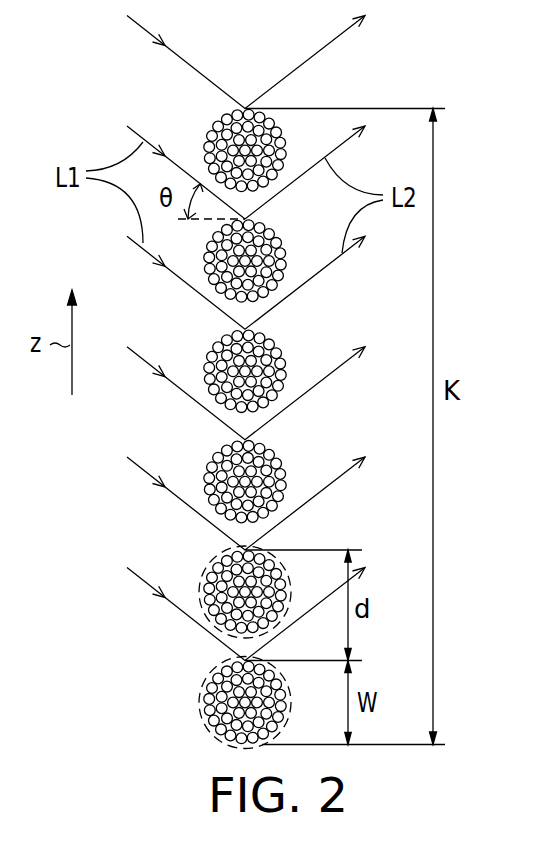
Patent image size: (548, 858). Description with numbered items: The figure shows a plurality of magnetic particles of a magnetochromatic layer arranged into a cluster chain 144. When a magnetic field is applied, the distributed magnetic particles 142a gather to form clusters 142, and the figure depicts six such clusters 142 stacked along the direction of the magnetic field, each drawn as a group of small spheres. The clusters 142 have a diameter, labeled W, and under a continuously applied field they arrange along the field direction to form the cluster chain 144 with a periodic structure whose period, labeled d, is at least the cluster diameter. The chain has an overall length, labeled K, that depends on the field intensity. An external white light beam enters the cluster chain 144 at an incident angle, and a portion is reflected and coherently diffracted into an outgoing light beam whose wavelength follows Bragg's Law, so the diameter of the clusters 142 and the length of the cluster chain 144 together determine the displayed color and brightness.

The cluster chain 144 is at (186, 89).
The cluster 142 is at (200, 703).
The magnetic particle 142a is at (211, 680).